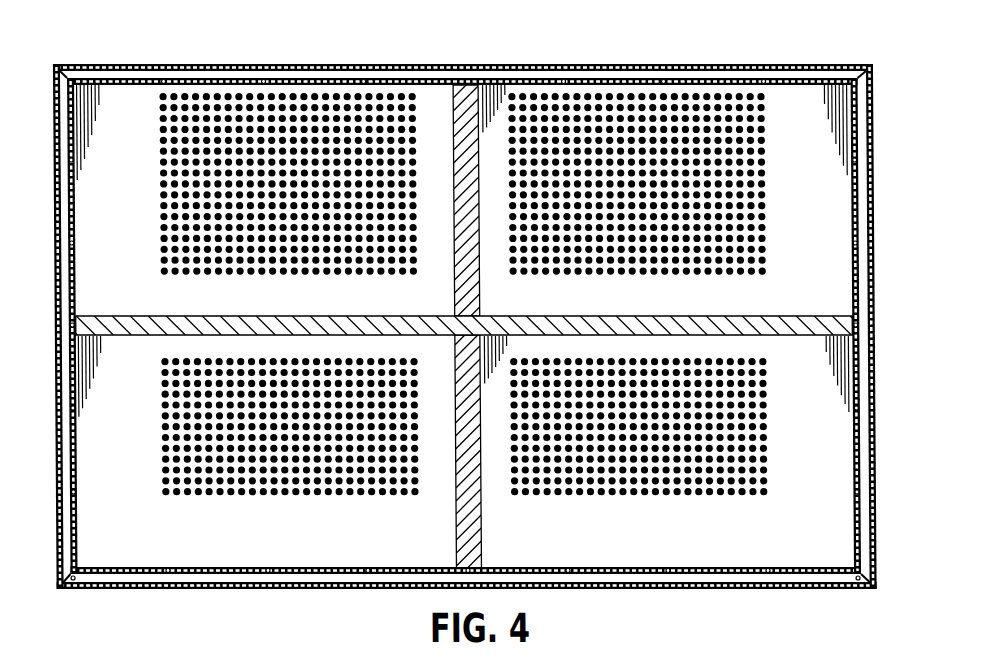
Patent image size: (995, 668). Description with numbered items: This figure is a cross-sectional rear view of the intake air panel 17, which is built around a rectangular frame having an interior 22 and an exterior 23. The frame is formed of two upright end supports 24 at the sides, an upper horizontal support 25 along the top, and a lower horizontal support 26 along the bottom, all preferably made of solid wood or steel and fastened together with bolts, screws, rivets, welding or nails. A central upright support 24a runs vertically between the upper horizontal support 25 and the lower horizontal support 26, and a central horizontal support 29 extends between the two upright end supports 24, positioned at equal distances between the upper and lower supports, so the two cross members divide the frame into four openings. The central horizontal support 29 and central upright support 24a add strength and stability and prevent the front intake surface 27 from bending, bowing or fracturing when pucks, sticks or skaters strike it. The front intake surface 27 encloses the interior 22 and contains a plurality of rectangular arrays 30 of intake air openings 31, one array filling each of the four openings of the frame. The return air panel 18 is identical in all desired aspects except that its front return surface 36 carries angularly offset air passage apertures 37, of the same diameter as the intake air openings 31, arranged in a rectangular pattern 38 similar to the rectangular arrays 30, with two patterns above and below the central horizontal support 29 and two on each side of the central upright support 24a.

The intake air panel 17 is at (465, 331).
The return air panel 18 is at (465, 331).
The interior 22 is at (94, 552).
The exterior 23 is at (53, 587).
The upright end supports 24 is at (60, 392).
The central upright support 24a is at (466, 87).
The upper horizontal support 25 is at (312, 72).
The lower horizontal support 26 is at (349, 578).
The front intake surface 27 is at (290, 497).
The central horizontal support 29 is at (65, 326).
The rectangular arrays 30 is at (298, 151).
The intake air openings 31 is at (447, 151).
The front return surface 36 is at (247, 540).
The angularly offset air passage apertures 37 is at (401, 106).
The rectangular pattern 38 is at (347, 106).